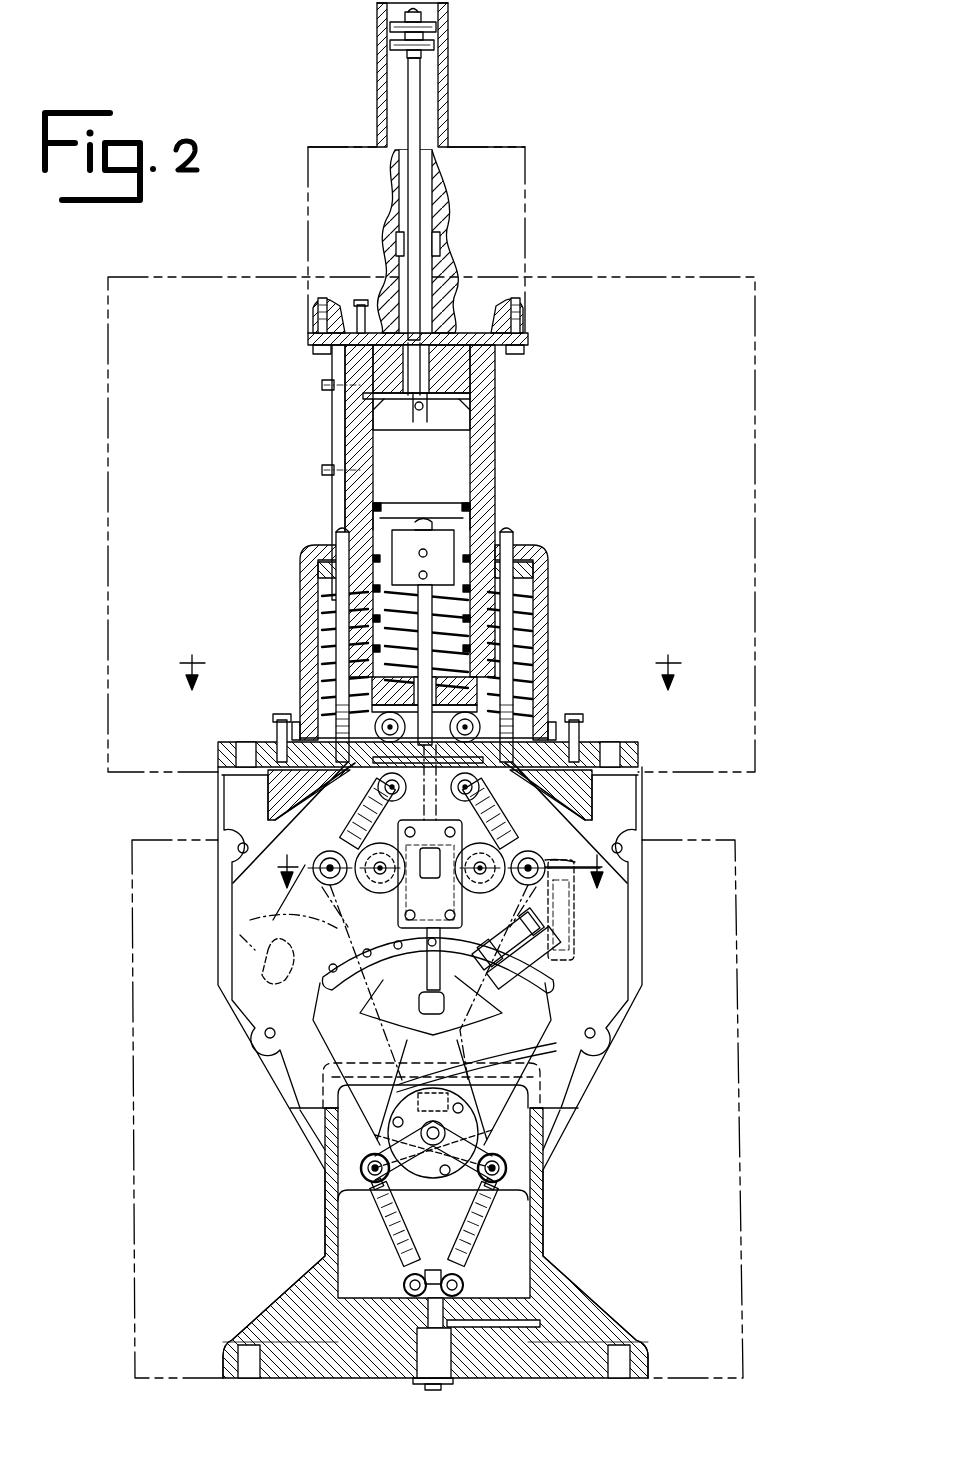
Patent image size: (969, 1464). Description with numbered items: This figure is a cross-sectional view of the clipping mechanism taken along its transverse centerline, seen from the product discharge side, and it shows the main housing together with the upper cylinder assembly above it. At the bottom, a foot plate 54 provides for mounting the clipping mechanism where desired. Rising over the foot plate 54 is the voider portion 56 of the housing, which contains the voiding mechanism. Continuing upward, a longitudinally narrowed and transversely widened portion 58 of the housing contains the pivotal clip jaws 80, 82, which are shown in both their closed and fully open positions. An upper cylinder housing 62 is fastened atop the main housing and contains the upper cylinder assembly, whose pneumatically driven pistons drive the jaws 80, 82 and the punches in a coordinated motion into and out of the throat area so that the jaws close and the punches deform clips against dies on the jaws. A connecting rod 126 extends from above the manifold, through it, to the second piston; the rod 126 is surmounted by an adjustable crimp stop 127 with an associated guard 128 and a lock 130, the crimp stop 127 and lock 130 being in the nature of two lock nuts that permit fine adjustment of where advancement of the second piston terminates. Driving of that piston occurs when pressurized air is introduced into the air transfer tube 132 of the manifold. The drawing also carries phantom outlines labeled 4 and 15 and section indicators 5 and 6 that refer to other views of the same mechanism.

The valve operating mechanism assembly 4 is at (132, 1048).
The actuator assembly 15 is at (755, 487).
The foot plate 54 is at (583, 1338).
The voider portion 56 is at (543, 1195).
The longitudinally narrowed and transversely widened portion 58 is at (643, 975).
The upper cylinder housing 62 is at (548, 600).
The clip jaw 80 is at (228, 918).
The clip jaw 82 is at (592, 925).
The connecting rod 126 is at (416, 95).
The adjustable crimp stop 127 is at (434, 45).
The guard 128 is at (440, 29).
The lock 130 is at (390, 25).
The air transfer tube 132 is at (436, 240).
The section line 5- 5 is at (434, 685).
The section line 6- 6 is at (444, 887).